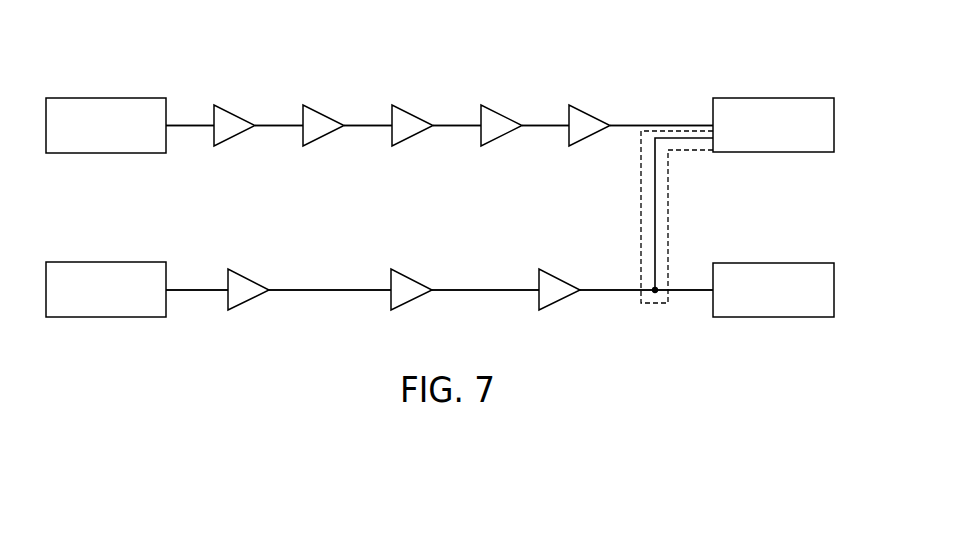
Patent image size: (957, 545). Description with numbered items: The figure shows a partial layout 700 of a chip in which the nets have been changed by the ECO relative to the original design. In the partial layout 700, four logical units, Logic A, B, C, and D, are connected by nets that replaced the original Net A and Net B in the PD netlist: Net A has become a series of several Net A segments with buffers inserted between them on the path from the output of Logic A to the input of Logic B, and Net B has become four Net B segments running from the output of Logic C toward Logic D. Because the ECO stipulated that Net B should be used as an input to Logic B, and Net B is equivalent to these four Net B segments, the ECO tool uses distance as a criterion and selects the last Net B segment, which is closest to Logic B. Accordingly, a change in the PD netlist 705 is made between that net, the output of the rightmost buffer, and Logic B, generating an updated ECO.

The partial layout 700 is at (758, 65).
The change in the PD netlist 705 is at (655, 304).